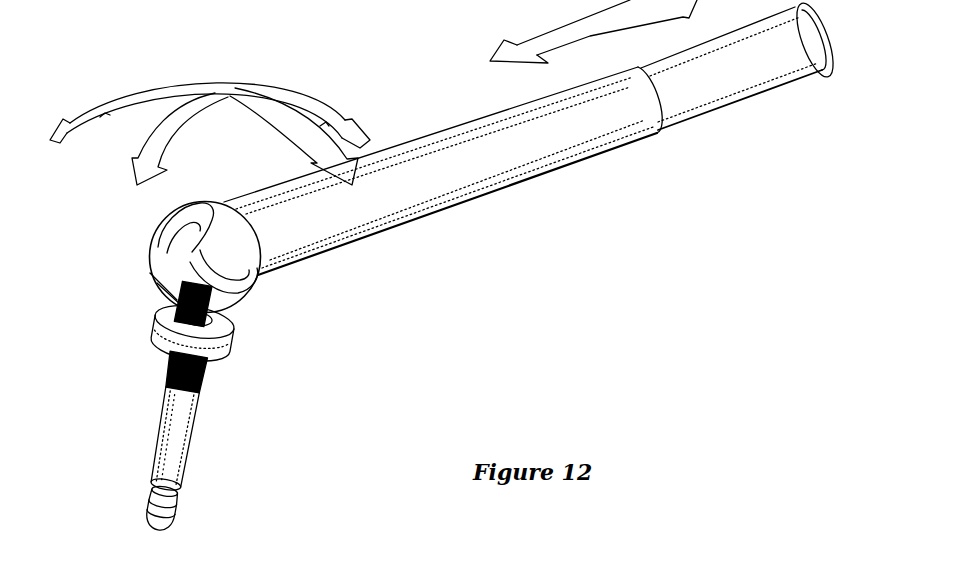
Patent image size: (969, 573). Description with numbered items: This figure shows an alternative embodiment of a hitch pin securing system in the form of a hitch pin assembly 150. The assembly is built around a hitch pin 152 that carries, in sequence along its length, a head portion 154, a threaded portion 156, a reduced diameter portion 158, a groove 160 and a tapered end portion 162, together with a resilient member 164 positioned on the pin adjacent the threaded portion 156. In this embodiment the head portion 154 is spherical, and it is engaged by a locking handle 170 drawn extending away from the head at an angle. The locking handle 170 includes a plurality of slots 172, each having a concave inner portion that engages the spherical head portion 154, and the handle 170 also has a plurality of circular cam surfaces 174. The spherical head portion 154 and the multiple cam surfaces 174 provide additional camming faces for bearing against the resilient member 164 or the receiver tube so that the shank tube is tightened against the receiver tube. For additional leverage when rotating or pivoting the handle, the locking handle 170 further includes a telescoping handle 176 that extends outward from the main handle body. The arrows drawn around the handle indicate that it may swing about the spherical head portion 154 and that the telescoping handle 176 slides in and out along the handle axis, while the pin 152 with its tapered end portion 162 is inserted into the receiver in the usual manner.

The hitch pin assembly 150 is at (532, 343).
The hitch pin 152 is at (213, 425).
The head portion 154 is at (173, 267).
The threaded portion 156 is at (168, 383).
The reduced diameter portion 158 is at (152, 462).
The groove 160 is at (183, 500).
The tapered end portion 162 is at (145, 522).
The resilient member 164 is at (217, 344).
The locking handle 170 is at (588, 172).
The slots 172 is at (198, 223).
The circular cam surfaces 174 is at (230, 243).
The telescoping handle 176 is at (773, 105).